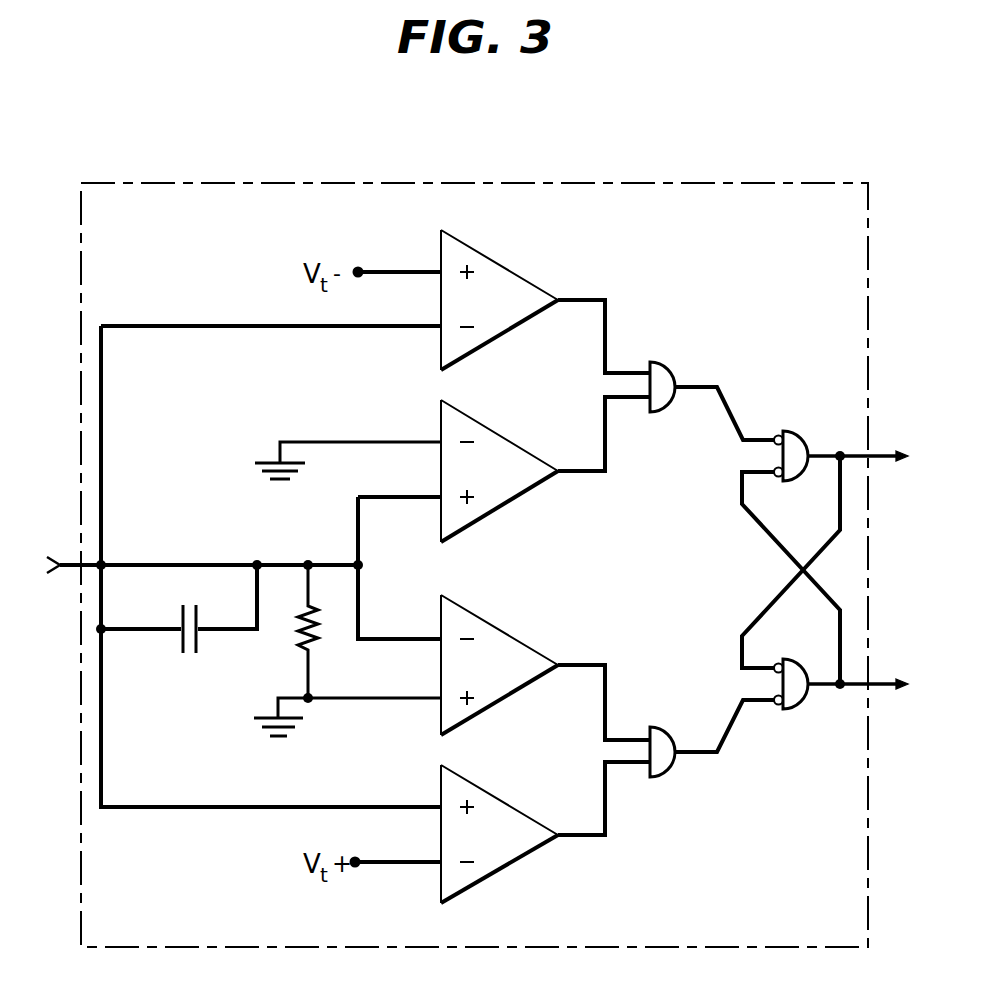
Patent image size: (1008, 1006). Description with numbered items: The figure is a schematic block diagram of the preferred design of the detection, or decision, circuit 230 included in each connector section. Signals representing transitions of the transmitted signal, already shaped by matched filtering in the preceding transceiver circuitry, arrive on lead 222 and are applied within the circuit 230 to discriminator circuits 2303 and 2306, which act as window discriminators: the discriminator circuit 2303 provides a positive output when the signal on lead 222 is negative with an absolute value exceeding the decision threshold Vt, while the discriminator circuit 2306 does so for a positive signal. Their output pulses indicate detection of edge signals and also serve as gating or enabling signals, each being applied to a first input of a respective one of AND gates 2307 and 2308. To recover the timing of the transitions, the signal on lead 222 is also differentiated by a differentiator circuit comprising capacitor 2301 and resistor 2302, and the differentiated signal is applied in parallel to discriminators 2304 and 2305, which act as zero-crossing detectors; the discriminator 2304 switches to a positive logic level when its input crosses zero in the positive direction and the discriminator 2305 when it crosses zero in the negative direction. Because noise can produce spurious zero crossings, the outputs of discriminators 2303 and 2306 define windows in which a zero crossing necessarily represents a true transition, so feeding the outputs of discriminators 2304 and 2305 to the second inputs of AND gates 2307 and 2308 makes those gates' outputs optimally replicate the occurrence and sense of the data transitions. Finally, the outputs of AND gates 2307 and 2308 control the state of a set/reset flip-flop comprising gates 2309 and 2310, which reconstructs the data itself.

The detection circuit 230 is at (545, 183).
The lead 222 is at (104, 563).
The capacitor 2301 is at (180, 640).
The resistor 2302 is at (297, 632).
The discriminator circuit 2303 is at (510, 268).
The discriminator 2304 is at (512, 442).
The discriminator 2305 is at (497, 628).
The discriminator circuit 2306 is at (497, 798).
The AND gate 2307 is at (670, 374).
The AND gate 2308 is at (665, 766).
The gate 2309 is at (797, 430).
The gate 2310 is at (805, 704).